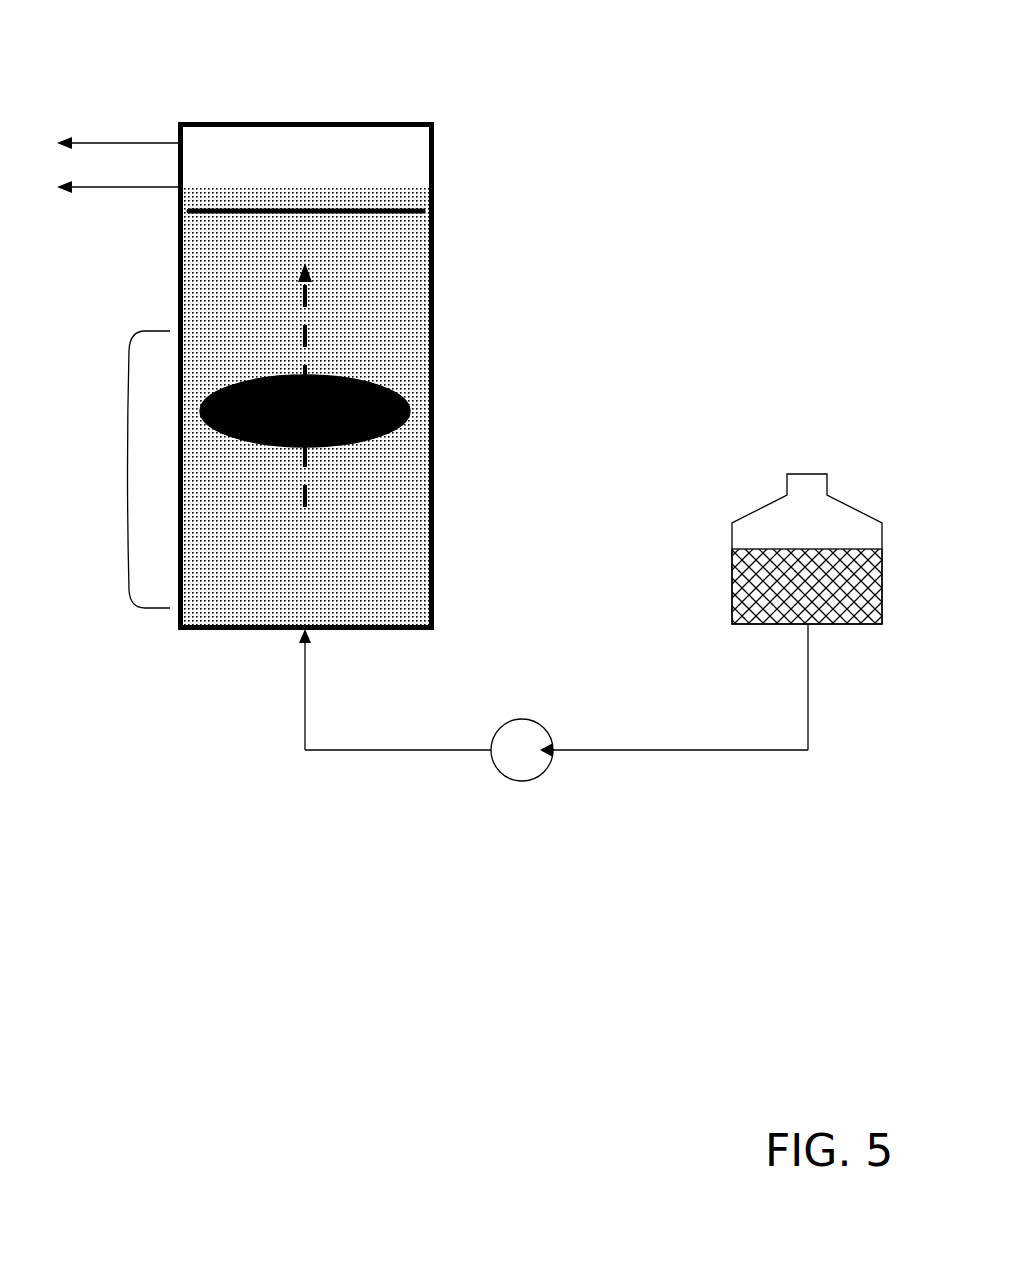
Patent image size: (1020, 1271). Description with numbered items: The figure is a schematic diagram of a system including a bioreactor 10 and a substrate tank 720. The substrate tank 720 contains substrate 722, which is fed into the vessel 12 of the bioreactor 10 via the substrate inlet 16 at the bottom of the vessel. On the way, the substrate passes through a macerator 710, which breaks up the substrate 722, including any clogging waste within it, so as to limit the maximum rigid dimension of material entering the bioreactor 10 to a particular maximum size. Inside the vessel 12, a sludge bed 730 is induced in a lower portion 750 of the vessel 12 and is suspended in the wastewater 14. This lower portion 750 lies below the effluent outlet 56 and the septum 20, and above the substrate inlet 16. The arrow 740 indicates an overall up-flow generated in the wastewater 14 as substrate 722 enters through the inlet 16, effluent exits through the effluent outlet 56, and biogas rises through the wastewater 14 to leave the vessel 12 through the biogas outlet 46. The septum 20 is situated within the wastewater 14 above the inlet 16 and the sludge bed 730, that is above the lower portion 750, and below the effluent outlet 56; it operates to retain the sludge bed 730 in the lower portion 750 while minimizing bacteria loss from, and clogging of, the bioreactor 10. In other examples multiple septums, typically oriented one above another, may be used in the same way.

The bioreactor 10 is at (308, 52).
The vessel 12 is at (433, 283).
The wastewater 14 is at (262, 593).
The substrate inlet 16 is at (305, 663).
The septum 20 is at (356, 210).
The biogas outlet 46 is at (164, 142).
The effluent outlet 56 is at (164, 188).
The macerator 710 is at (522, 781).
The substrate tank 720 is at (759, 508).
The substrate 722 is at (780, 578).
The sludge bed 730 is at (378, 385).
The arrow indicating overall up-flow 740 is at (305, 302).
The lower portion of vessel 750 is at (116, 469).